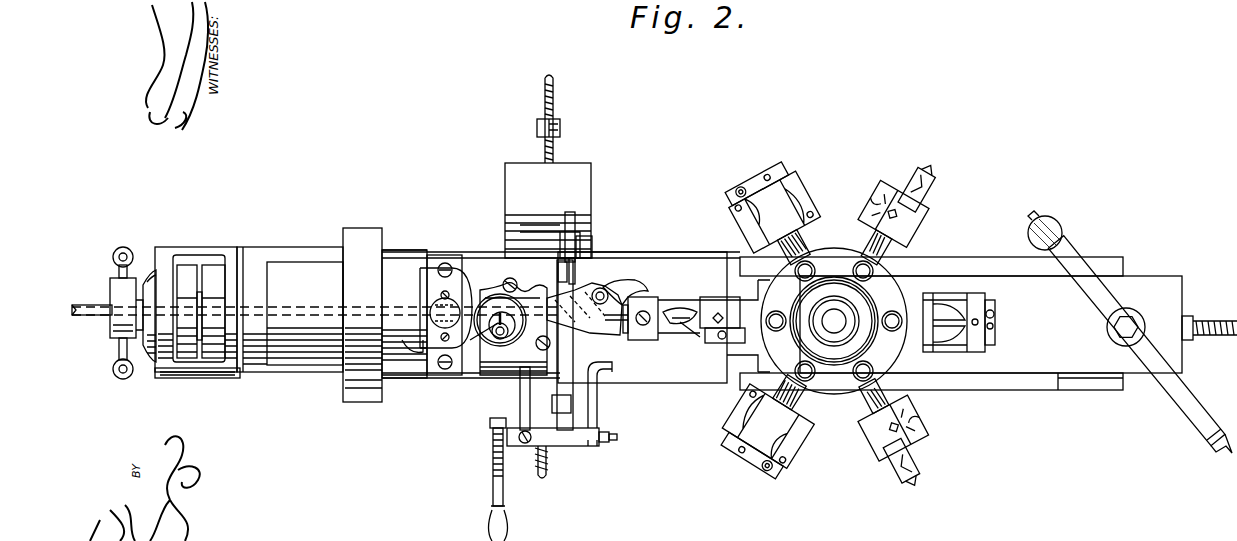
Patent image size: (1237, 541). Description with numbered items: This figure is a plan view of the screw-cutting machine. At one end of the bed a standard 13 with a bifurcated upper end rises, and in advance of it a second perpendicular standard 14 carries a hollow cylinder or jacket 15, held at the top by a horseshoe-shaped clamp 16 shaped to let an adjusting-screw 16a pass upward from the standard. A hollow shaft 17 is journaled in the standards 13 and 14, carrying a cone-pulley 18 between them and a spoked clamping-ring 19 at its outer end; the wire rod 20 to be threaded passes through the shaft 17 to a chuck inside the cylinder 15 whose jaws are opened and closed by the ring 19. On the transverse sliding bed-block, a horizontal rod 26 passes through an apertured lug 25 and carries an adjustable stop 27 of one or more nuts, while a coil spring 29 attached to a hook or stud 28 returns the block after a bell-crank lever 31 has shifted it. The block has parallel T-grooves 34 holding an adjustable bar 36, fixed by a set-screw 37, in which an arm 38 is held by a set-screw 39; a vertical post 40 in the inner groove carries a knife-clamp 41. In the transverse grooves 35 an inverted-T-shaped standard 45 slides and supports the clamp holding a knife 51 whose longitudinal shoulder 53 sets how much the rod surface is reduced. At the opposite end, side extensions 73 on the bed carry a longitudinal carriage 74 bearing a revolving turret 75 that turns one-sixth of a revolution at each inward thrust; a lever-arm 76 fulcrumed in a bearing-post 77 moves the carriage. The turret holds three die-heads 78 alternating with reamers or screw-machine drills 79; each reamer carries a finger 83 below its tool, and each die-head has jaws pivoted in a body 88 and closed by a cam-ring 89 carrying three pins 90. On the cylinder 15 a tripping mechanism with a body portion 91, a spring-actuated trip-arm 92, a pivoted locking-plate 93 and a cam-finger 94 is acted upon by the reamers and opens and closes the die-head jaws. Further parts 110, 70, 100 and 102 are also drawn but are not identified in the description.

The standard 13 is at (165, 262).
The second perpendicular standard 14 is at (448, 258).
The hollow cylinder or jacket 15 is at (505, 347).
The horseshoe-shaped clamp 16 is at (422, 282).
The adjusting-screw 16a is at (418, 350).
The hollow shaft 17 is at (198, 352).
The cone-pulley 18 is at (290, 309).
The spoked clamping-ring 19 is at (126, 313).
The wire rod 20 is at (92, 298).
The collar 110 is at (146, 280).
The apertured lug 25 is at (548, 210).
The horizontal rod 26 is at (555, 160).
The adjustable stop 27 is at (536, 128).
The hook or stud 28 is at (548, 477).
The coil or spiral spring 29 is at (546, 462).
The elbow or bell-crank lever 31 is at (500, 485).
The parallel T-grooves 34 is at (528, 403).
The transverse grooves 35 is at (548, 226).
The bar 36 is at (553, 437).
The set-screw 37 is at (523, 445).
The arm 38 is at (600, 408).
The set-screw 39 is at (618, 438).
The vertical post 40 is at (561, 404).
The knife-clamp 41 is at (578, 380).
The inverted-T-shaped standard 45 is at (578, 244).
The knife 51 is at (592, 256).
The longitudinal shoulder 53 is at (557, 274).
The lever arm 70 is at (1150, 352).
The side extensions 73 is at (1025, 385).
The carriage 74 is at (991, 324).
The revolving turret 75 is at (900, 292).
The lever-arm 76 is at (953, 290).
The bearing-post 77 is at (1064, 213).
The die-heads 78 is at (800, 208).
The reamers or screw-machine drills 79 is at (712, 297).
The finger 83 is at (918, 194).
The body 88 is at (778, 315).
The cam-ring 89 is at (785, 183).
The pins 90 is at (618, 286).
The body portion 91 is at (530, 292).
The spring-actuated trip-arm 92 is at (583, 320).
The pivoted locking-plate 93 is at (597, 288).
The cam-finger 94 is at (626, 312).
The block 100 is at (636, 314).
The cam disk 102 is at (496, 296).